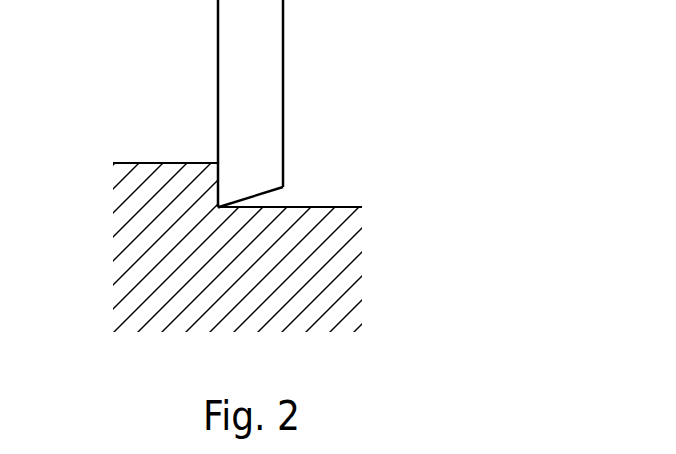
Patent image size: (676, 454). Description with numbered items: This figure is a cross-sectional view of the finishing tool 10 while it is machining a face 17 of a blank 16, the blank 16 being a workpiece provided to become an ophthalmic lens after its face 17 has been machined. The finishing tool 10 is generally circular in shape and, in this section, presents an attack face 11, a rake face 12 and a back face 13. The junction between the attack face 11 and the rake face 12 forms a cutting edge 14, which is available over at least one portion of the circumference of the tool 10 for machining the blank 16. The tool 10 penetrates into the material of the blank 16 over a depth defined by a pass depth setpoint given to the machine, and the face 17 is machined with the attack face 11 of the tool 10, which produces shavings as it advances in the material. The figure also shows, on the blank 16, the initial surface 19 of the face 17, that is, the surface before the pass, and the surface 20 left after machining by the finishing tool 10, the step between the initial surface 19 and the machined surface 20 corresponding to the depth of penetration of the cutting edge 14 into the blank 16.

The finishing tool 10 is at (253, 191).
The attack face 11 is at (215, 118).
The rake face 12 is at (258, 201).
The back face 13 is at (288, 97).
The cutting edge 14 is at (218, 208).
The blank 16 is at (137, 231).
The face 17 is at (145, 116).
The initial surface 19 is at (123, 160).
The surface after machining 20 is at (318, 203).